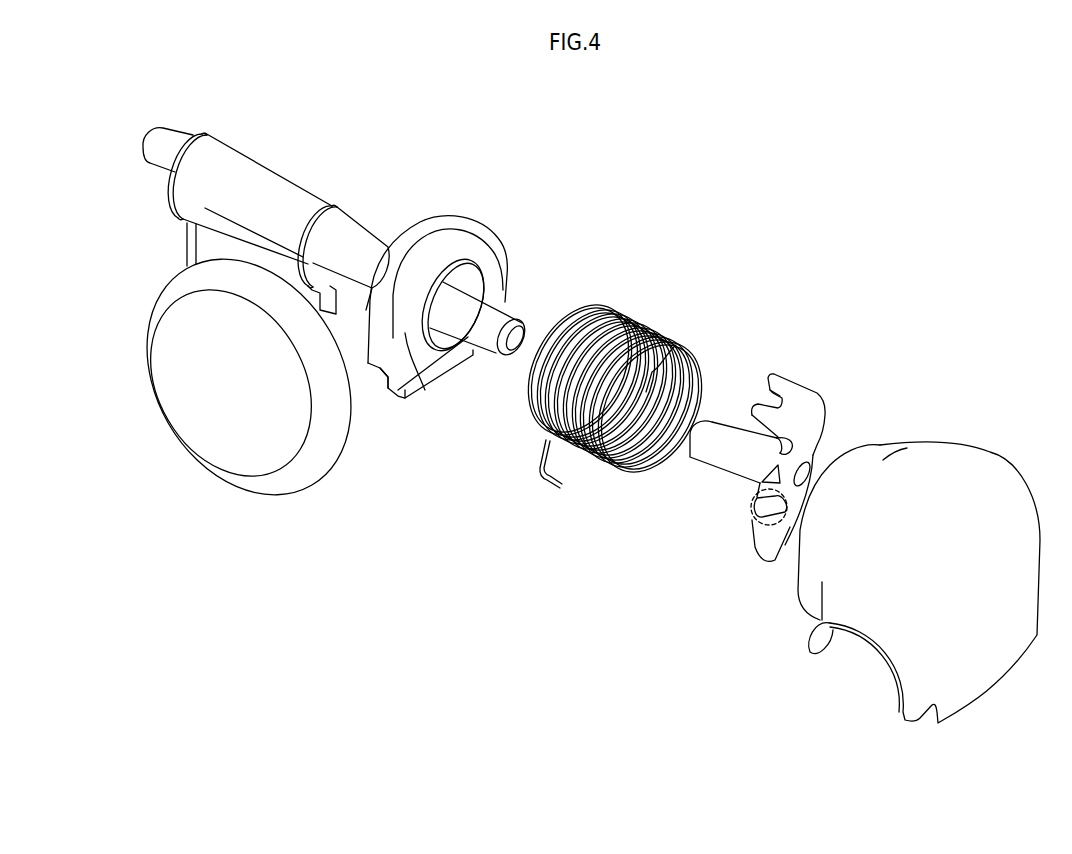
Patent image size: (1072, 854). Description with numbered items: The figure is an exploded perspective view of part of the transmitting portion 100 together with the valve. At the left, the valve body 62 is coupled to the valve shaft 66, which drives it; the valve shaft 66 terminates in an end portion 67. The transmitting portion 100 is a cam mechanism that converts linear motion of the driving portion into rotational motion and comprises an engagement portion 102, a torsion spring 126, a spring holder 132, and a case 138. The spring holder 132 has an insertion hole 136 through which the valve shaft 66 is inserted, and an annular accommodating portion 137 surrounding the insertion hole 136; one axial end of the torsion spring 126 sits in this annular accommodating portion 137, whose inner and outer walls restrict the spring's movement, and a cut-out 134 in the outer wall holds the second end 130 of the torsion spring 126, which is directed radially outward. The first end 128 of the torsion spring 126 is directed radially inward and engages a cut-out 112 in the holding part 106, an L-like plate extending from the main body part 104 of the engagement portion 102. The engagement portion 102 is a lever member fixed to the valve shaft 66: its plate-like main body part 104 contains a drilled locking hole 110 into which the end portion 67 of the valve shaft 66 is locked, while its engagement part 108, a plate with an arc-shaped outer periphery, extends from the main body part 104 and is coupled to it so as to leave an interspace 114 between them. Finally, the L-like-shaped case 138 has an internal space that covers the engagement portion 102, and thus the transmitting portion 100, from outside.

The valve body 62 is at (210, 452).
The valve shaft 66 is at (349, 250).
The end portion 67 is at (531, 307).
The transmitting portion 100 is at (768, 170).
The engagement portion 102 is at (774, 418).
The main body part 104 is at (813, 455).
The holding part 106 is at (788, 363).
The engagement part 108 is at (775, 540).
The locking hole 110 is at (754, 478).
The cut-out 112 is at (760, 392).
The interspace 114 is at (752, 508).
The torsion spring 126 is at (589, 405).
The first end 128 is at (649, 383).
The second end 130 is at (535, 480).
The spring holder 132 is at (444, 297).
The cut-out 134 is at (377, 374).
The insertion hole 136 is at (472, 276).
The annular accommodating portion 137 is at (405, 333).
The case 138 is at (990, 467).